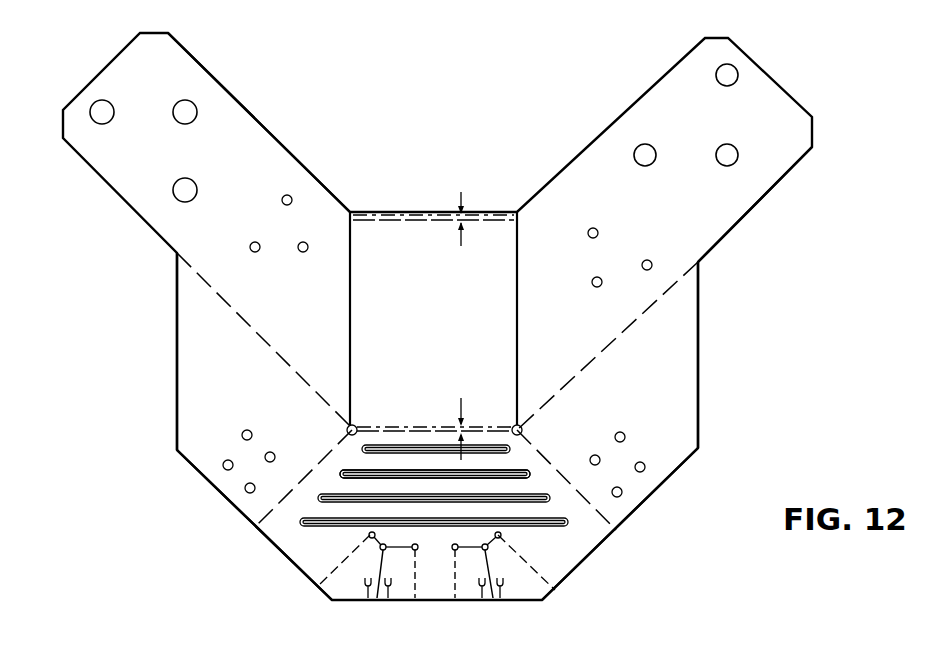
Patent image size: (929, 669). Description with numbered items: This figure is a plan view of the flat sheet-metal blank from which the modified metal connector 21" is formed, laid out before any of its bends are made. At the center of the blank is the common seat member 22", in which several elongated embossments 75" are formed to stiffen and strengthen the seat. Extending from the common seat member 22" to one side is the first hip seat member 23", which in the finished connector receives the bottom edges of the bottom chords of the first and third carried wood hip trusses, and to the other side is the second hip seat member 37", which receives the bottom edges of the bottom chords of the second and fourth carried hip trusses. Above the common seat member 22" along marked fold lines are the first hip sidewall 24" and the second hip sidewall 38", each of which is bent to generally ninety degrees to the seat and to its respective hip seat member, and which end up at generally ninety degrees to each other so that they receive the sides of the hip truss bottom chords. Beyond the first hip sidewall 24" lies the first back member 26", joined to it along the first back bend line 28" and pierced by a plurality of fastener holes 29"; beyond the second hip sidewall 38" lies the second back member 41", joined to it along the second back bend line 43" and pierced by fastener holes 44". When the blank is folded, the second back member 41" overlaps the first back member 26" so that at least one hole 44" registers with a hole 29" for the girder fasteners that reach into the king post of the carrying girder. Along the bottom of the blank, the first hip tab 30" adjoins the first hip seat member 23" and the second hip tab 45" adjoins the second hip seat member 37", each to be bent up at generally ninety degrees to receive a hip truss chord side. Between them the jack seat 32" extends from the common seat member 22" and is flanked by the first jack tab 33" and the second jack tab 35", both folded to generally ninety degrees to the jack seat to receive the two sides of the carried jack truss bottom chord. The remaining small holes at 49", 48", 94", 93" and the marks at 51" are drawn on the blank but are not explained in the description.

The metal connector 21 is at (792, 84).
The second back member 41 is at (257, 132).
The fastener holes 44 is at (181, 118).
The small apertures 49 is at (286, 205).
The first back member 26 is at (735, 212).
The fastener holes 29 is at (722, 86).
The small apertures 48 is at (643, 263).
The second back bend line 43 is at (260, 327).
The first back bend line 28 is at (553, 395).
The second hip sidewall 38 is at (193, 364).
The first hip sidewall 24 is at (672, 428).
The apertures 94 is at (250, 483).
The apertures 93 is at (635, 465).
The common seat member 22 is at (444, 485).
The embossments 75 is at (364, 478).
The second hip tab 45 is at (346, 588).
The first hip tab 30 is at (526, 578).
The second hip seat member 37 is at (297, 553).
The first hip seat member 23 is at (586, 560).
The second jack tab 35 is at (402, 578).
The jack seat 32 is at (448, 578).
The first jack tab 33 is at (473, 578).
The tab slots 51 is at (388, 588).